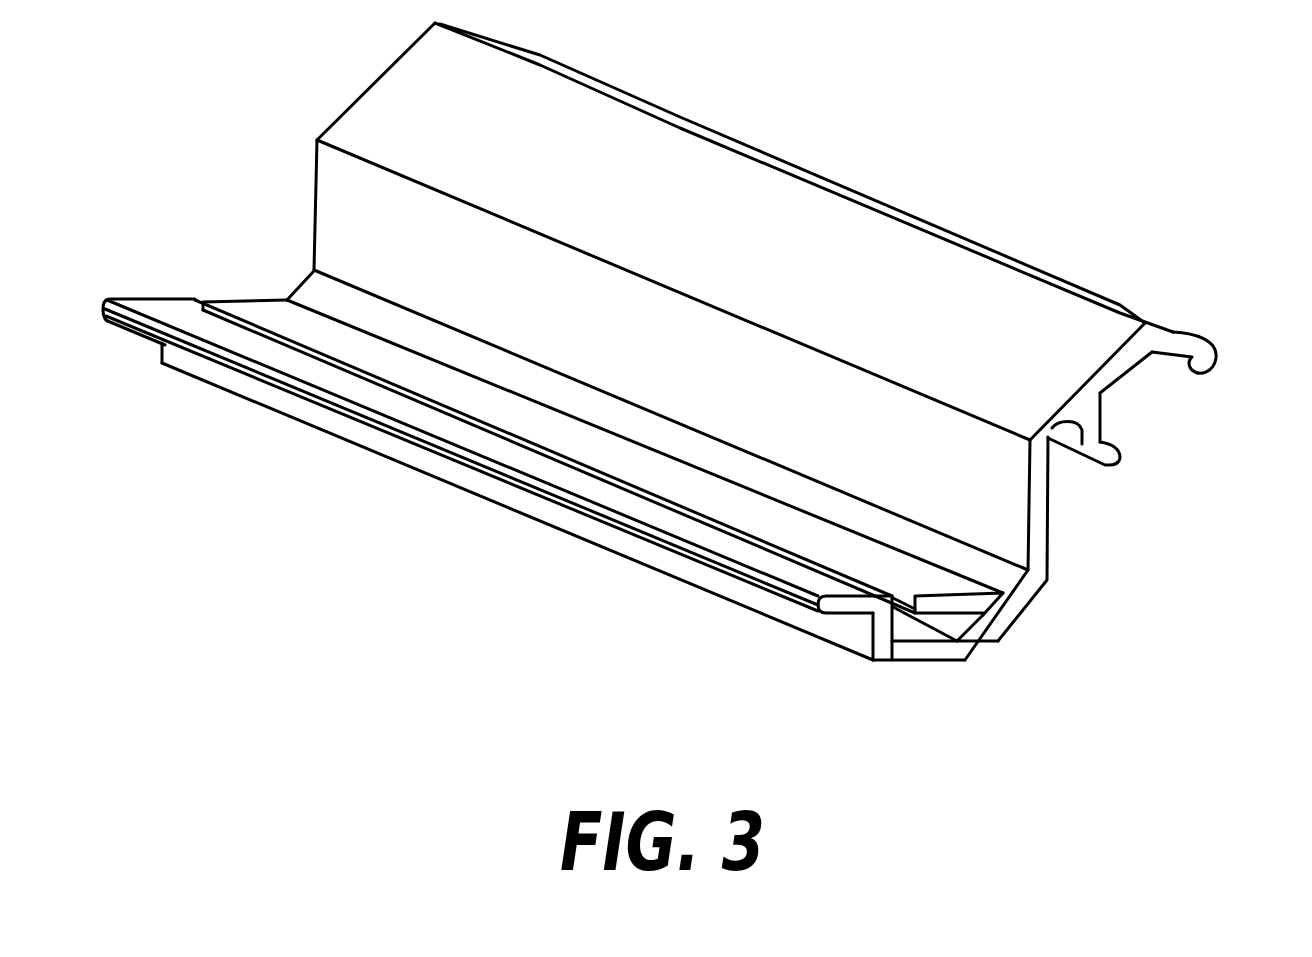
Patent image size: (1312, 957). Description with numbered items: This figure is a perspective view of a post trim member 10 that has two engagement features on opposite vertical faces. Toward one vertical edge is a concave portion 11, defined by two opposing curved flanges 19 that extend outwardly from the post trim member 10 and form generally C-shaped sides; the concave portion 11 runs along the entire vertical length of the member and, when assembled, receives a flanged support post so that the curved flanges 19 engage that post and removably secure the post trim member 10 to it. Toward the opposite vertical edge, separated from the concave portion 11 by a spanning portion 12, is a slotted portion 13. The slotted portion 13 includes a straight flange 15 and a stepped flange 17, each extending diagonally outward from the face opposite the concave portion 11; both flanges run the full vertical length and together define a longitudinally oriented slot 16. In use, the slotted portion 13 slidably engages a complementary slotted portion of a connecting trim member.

The post trim member 10 is at (1147, 137).
The concave portion 11 is at (1147, 392).
The spanning portion 12 is at (1040, 522).
The slotted portion 13 is at (938, 670).
The straight flange 15 is at (960, 605).
The slot 16 is at (917, 628).
The stepped flange 17 is at (878, 633).
The curved flanges 19 is at (1203, 337).